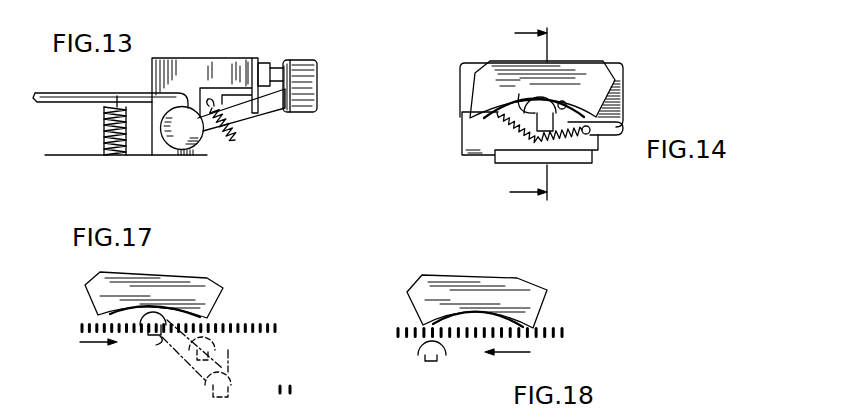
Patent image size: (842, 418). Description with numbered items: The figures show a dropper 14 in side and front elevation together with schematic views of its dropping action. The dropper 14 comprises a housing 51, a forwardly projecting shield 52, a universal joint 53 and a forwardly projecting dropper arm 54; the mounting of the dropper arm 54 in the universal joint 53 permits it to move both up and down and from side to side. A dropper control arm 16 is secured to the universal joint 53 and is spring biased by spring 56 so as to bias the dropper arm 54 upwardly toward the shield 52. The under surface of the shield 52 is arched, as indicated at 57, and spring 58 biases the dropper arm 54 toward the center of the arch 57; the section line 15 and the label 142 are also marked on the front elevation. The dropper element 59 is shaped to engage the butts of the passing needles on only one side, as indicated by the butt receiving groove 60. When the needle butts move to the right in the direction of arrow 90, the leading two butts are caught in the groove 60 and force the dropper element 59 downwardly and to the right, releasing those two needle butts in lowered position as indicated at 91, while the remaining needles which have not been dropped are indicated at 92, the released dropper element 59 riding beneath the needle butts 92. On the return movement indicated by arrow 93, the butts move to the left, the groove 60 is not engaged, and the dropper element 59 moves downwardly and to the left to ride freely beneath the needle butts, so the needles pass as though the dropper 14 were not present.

In FIG. 13, the dropper 14 is at (243, 40).
In FIG. 14, the operating mechanism housing 142 is at (458, 76).
In FIG. 14, the section line 15- 15 is at (527, 106).
In FIG. 13, the dropper control arm 16 is at (84, 93).
In FIG. 13, the housing 51 is at (195, 62).
In FIG. 14, the housing 51 is at (618, 90).
In FIG. 13, the shield 52 is at (318, 85).
In FIG. 14, the shield 52 is at (600, 50).
In FIG. 17, the shield 52 is at (209, 265).
In FIG. 18, the shield 52 is at (521, 268).
In FIG. 13, the universal joint 53 is at (202, 143).
In FIG. 13, the dropper arm 54 is at (272, 114).
In FIG. 14, the dropper arm 54 is at (533, 136).
In FIG. 13, the spring 56 is at (103, 124).
In FIG. 14, the arch 57 is at (565, 102).
In FIG. 13, the spring 58 is at (231, 133).
In FIG. 14, the spring 58 is at (508, 125).
In FIG. 14, the dropper element 59 is at (547, 92).
In FIG. 17, the dropper element 59 is at (167, 300).
In FIG. 18, the dropper element 59 is at (433, 361).
In FIG. 14, the butt receiving groove 60 is at (516, 98).
In FIG. 17, the butt receiving groove 60 is at (158, 345).
In FIG. 18, the butt receiving groove 60 is at (418, 352).
In FIG. 17, the arrow 90 is at (85, 345).
In FIG. 17, the needle butts in lowered position 91 is at (308, 375).
In FIG. 17, the needle butts 92 is at (253, 303).
In FIG. 18, the arrow 93 is at (508, 354).